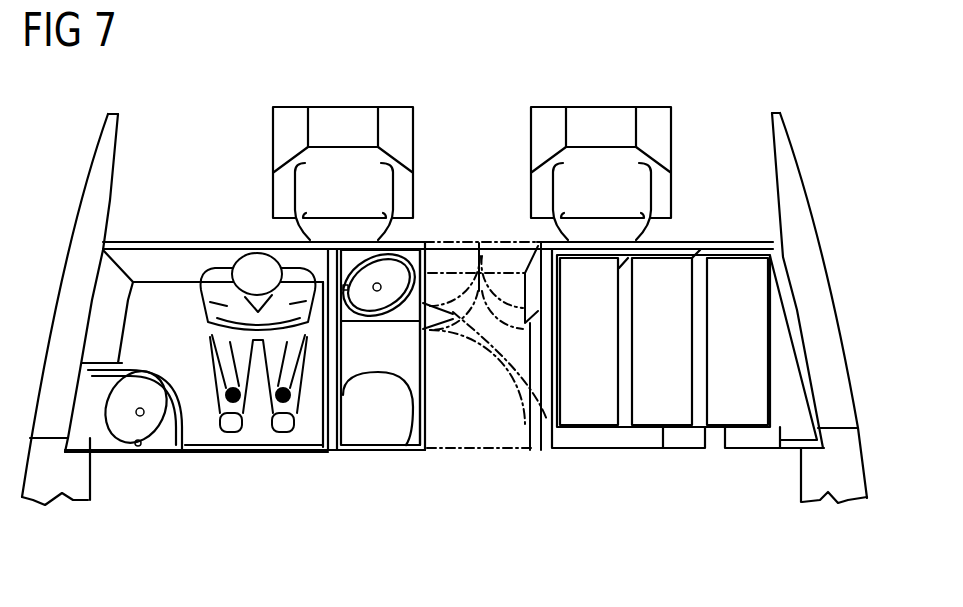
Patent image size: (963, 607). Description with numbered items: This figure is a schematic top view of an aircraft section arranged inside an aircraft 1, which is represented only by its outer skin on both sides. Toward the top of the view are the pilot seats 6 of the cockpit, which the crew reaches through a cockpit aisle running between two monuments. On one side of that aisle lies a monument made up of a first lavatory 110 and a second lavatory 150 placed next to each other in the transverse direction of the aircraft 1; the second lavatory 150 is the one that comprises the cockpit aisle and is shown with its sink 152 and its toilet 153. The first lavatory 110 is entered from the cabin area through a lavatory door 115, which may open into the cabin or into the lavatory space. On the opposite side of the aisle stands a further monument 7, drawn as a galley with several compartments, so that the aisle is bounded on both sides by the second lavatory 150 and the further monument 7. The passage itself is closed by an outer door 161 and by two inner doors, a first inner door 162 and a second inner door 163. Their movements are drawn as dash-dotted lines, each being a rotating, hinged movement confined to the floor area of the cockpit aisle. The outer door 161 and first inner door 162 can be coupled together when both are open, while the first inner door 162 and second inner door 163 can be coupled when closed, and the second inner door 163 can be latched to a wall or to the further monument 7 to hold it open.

The aircraft 1 is at (88, 187).
The pilot seats 6 is at (292, 120).
The further monument 7 is at (693, 488).
The first lavatory 110 is at (241, 488).
The lavatory door 115 is at (303, 450).
The second lavatory 150 is at (380, 313).
The sink 152 is at (365, 290).
The toilet 153 is at (373, 437).
The outer door 161 is at (482, 450).
The first inner door 162 is at (443, 253).
The second inner door 163 is at (500, 253).